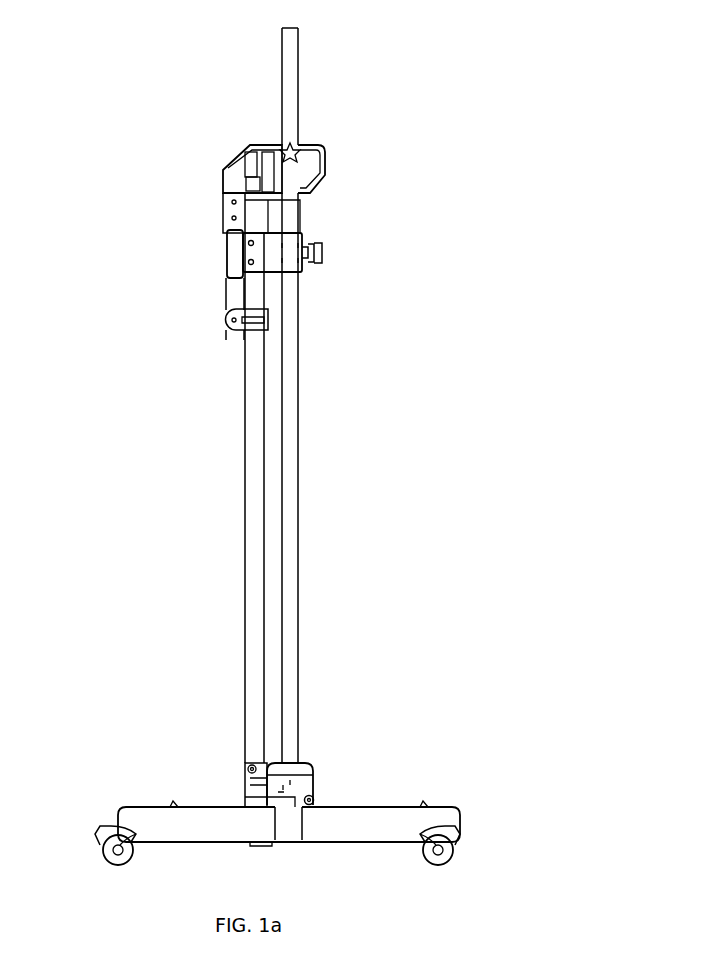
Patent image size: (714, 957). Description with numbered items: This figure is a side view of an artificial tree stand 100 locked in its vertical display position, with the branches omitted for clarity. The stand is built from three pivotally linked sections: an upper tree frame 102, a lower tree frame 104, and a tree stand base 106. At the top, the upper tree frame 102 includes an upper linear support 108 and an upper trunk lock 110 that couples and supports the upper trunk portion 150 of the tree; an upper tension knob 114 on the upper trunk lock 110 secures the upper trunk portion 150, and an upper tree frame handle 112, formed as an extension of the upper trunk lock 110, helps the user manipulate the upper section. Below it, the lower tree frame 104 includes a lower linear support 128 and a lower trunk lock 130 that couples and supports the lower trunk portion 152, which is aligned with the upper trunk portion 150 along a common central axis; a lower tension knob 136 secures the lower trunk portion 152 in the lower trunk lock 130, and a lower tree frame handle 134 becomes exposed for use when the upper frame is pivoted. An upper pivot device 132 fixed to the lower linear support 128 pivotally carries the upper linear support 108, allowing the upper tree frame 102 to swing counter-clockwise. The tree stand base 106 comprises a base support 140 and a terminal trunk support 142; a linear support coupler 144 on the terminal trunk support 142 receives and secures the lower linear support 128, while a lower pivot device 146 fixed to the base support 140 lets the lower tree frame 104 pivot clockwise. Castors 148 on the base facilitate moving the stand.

The artificial tree stand 100 is at (525, 85).
The upper tree frame 102 is at (148, 170).
The lower tree frame 104 is at (157, 535).
The tree stand base 106 is at (108, 733).
The upper linear support 108 is at (225, 305).
The upper trunk lock 110 is at (228, 162).
The upper tree frame handle 112 is at (325, 147).
The upper tension knob 114 is at (285, 148).
The lower linear support 128 is at (245, 510).
The lower trunk lock 130 is at (300, 275).
The upper pivot device 132 is at (236, 330).
The lower tree frame handle 134 is at (235, 235).
The lower tension knob 136 is at (327, 248).
The base support 140 is at (148, 806).
The terminal trunk support 142 is at (302, 762).
The linear support coupler 144 is at (242, 762).
The lower pivot device 146 is at (315, 795).
The castors 148 is at (478, 830).
The upper trunk portion 150 is at (298, 72).
The lower trunk portion 152 is at (298, 605).